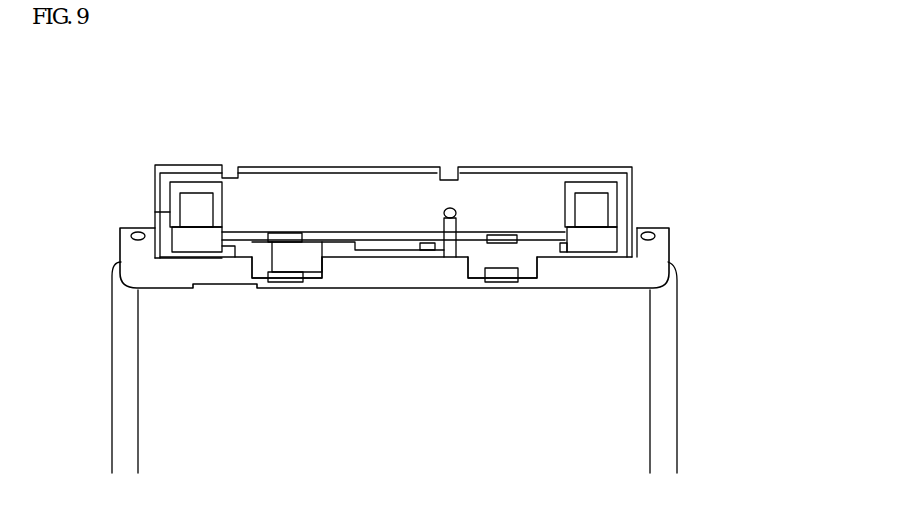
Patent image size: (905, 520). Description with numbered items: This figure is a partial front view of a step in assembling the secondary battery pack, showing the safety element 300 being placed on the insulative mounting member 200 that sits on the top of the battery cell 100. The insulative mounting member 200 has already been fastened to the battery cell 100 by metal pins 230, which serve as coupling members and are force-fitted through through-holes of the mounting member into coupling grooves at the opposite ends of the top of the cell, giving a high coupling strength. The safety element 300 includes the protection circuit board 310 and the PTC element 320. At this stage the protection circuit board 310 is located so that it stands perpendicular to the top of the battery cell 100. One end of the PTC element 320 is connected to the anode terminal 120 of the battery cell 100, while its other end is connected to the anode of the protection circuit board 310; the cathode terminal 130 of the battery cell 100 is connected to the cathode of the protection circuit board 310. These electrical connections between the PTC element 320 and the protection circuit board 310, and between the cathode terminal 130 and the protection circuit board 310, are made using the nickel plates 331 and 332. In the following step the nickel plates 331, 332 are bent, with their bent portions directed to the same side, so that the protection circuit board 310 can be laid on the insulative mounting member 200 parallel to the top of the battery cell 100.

The battery cell 100 is at (677, 375).
The anode terminal 120 is at (399, 268).
The cathode terminal 130 is at (577, 268).
The insulative mounting member 200 is at (466, 270).
The metal pin 230 is at (656, 230).
The safety element 300 is at (337, 178).
The protection circuit board 310 is at (363, 167).
The PTC element 320 is at (298, 250).
The nickel plate 331 is at (195, 210).
The nickel plate 332 is at (590, 205).